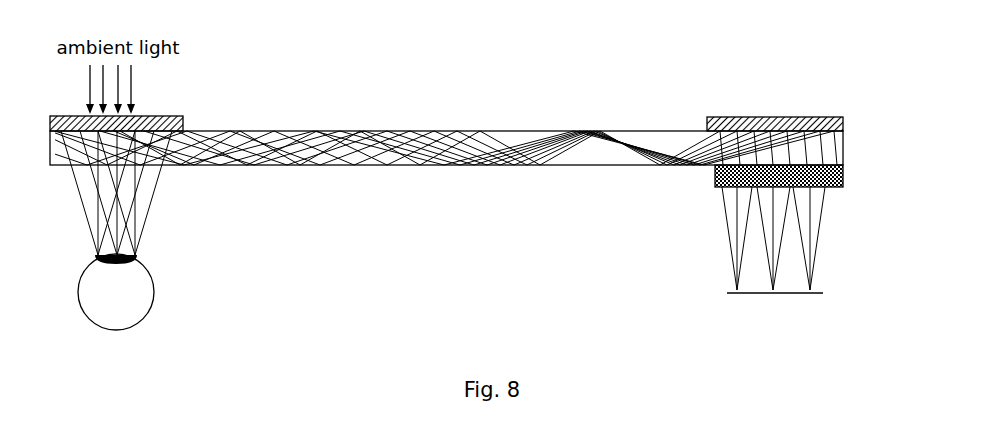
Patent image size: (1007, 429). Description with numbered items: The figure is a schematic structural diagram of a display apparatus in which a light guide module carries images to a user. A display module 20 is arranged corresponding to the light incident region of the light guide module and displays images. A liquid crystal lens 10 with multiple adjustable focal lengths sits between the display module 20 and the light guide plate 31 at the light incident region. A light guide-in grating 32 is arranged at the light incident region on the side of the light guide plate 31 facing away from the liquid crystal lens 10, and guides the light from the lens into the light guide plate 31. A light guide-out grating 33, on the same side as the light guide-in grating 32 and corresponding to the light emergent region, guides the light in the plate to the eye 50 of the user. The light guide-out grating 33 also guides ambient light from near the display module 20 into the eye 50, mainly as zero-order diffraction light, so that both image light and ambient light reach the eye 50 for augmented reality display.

The liquid crystal lens 10 is at (843, 170).
The display module 20 is at (825, 288).
The light guide plate 31 is at (843, 150).
The light guide-in grating 32 is at (775, 120).
The light guide-out grating 33 is at (183, 118).
The eye 50 is at (157, 290).